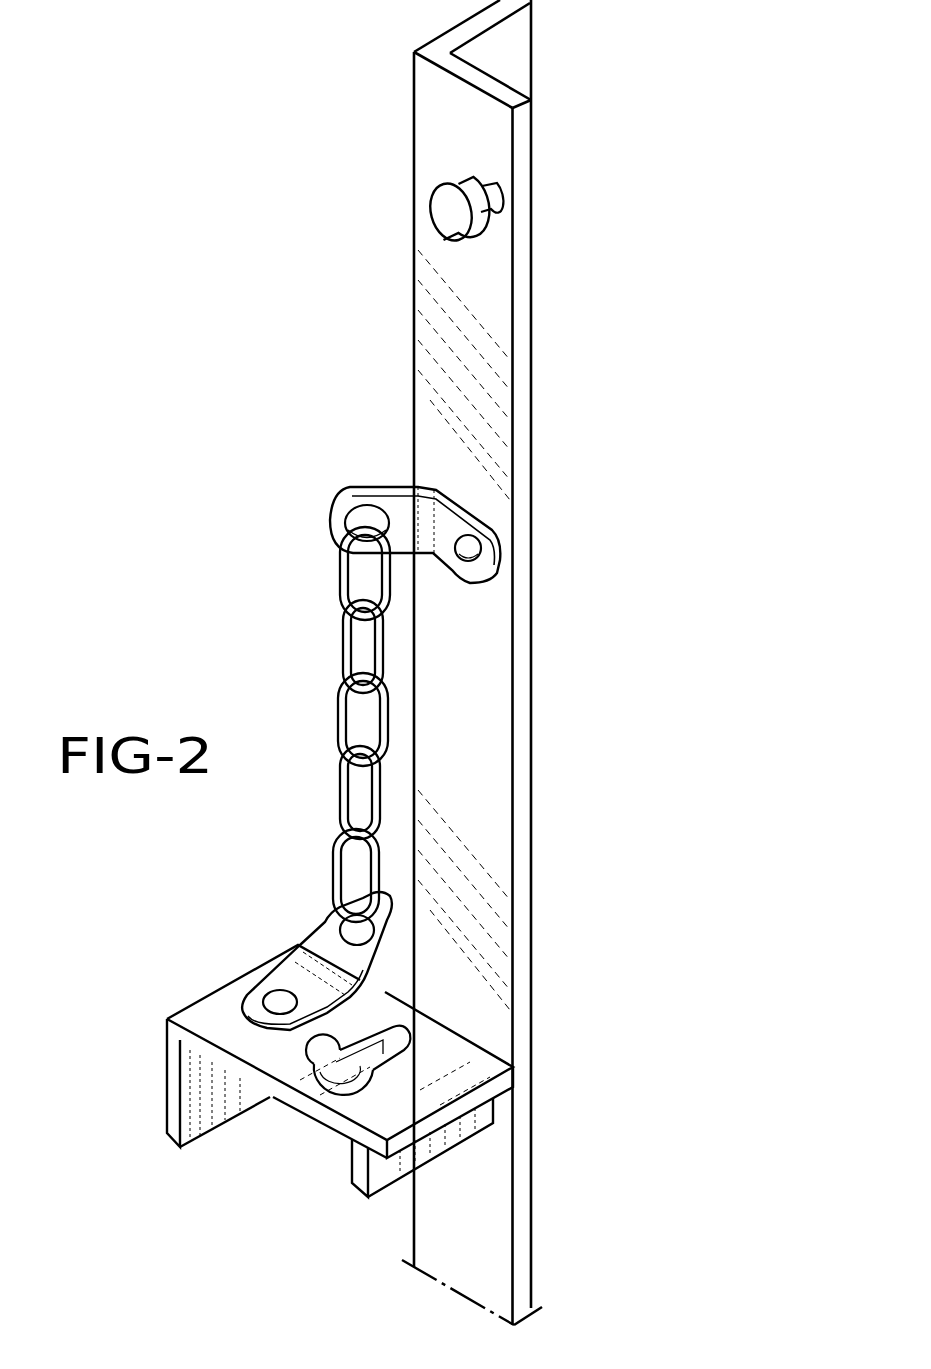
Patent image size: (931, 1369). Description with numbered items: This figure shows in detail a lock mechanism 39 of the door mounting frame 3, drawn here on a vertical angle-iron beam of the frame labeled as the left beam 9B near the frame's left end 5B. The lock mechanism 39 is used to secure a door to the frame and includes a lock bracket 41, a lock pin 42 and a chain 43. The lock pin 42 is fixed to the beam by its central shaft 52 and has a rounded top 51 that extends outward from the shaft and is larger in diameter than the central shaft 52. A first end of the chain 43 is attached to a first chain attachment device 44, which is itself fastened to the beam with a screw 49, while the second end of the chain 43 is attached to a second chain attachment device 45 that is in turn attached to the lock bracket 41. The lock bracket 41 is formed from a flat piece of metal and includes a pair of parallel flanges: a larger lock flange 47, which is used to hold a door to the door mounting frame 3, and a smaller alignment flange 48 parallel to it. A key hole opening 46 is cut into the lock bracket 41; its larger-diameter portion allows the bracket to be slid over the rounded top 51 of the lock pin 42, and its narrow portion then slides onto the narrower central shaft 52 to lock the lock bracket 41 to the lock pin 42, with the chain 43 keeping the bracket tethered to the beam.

The door mounting frame 3 is at (412, 100).
The left beam 9B is at (433, 154).
The left end 5B is at (388, 376).
The lock mechanism 39 is at (202, 287).
The lock pin 42 is at (475, 228).
The rounded top 51 is at (450, 226).
The central shaft 52 is at (487, 190).
The first chain attachment device 44 is at (455, 511).
The screw 49 is at (470, 548).
The chain 43 is at (338, 632).
The second chain attachment device 45 is at (330, 914).
The lock bracket 41 is at (298, 1088).
The lock flange 47 is at (167, 1083).
The key hole opening 46 is at (323, 1053).
The alignment flange 48 is at (350, 1167).